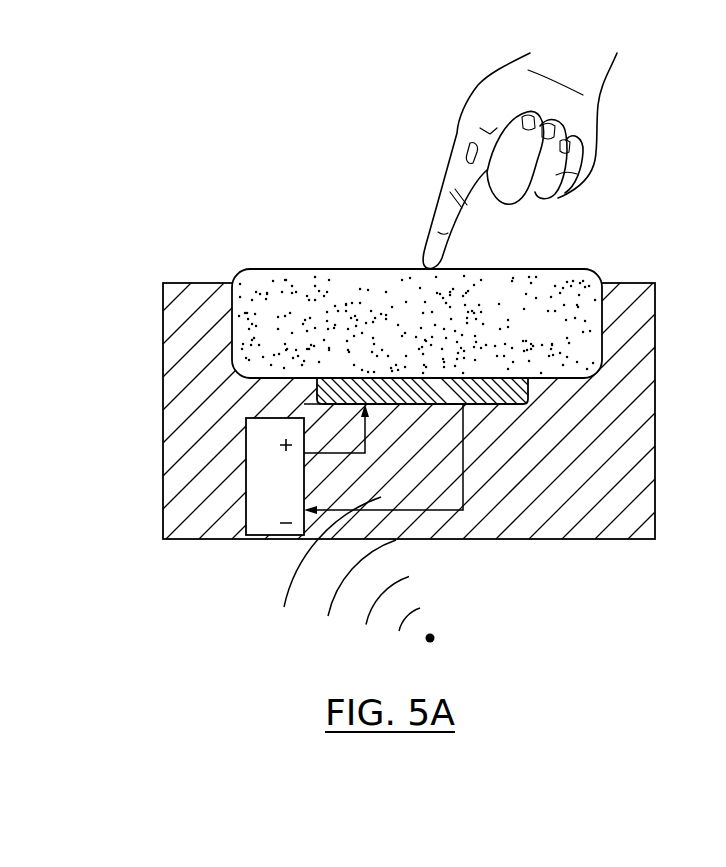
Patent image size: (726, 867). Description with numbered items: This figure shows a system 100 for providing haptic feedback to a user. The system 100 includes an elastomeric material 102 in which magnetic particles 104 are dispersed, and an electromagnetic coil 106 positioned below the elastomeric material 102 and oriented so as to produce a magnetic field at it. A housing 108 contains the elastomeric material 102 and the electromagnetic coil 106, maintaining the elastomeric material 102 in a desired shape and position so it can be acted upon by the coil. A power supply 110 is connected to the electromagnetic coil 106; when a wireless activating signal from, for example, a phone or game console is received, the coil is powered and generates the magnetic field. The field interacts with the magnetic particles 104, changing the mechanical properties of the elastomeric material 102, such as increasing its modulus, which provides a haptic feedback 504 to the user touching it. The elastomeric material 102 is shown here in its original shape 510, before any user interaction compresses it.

The system 100 is at (242, 120).
The elastomeric material 102 is at (268, 266).
The magnetic particles 104 is at (342, 305).
The electromagnetic coil 106 is at (335, 389).
The housing 108 is at (622, 300).
The power supply 110 is at (253, 506).
The haptic feedback 504 is at (430, 263).
The original shape 510 is at (537, 270).